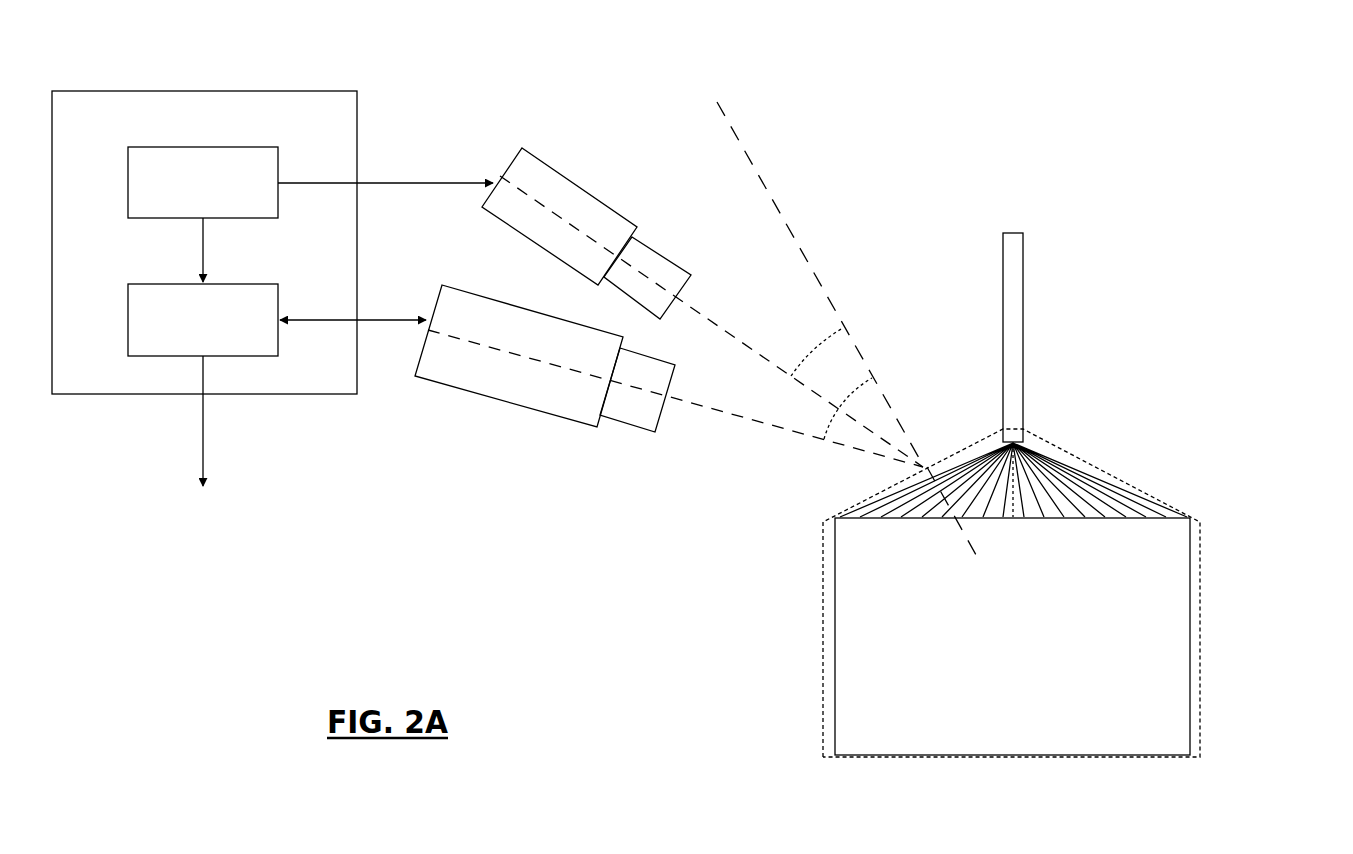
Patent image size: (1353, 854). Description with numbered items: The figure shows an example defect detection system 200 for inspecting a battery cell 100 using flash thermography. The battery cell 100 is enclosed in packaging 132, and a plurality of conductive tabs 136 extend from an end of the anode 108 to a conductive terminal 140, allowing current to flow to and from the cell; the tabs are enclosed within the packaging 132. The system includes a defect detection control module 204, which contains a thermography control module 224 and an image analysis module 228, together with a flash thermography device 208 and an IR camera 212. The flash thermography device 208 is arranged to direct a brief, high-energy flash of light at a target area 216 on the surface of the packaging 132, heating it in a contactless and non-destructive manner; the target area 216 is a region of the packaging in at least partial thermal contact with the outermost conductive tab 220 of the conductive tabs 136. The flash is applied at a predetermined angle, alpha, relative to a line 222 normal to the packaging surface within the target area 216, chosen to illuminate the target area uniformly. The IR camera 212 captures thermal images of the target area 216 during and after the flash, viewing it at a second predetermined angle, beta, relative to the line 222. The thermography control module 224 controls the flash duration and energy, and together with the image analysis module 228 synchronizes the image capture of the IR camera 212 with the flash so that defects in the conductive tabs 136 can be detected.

The battery cell 100 is at (1036, 495).
The anode 108 is at (835, 703).
The packaging 132 is at (823, 613).
The conductive tabs 136 is at (1135, 499).
The conductive terminal 140 is at (1023, 299).
The defect detection system 200 is at (243, 596).
The defect detection control module 204 is at (203, 90).
The flash thermography device 208 is at (512, 162).
The IR camera 212 is at (502, 403).
The target area 216 is at (874, 478).
The conductive tab 220 is at (934, 462).
The line normal to the surface 222 is at (752, 160).
The thermography control module 224 is at (127, 184).
The image analysis module 228 is at (127, 320).